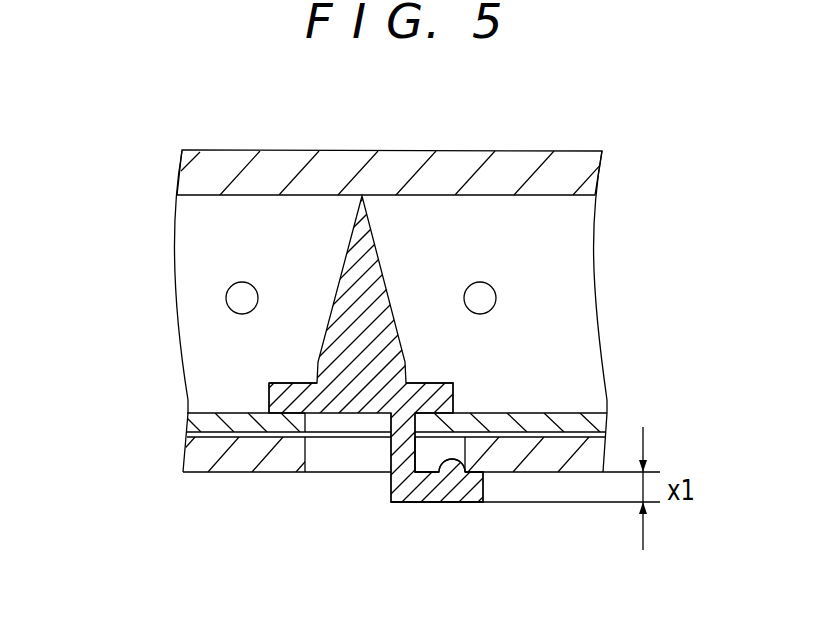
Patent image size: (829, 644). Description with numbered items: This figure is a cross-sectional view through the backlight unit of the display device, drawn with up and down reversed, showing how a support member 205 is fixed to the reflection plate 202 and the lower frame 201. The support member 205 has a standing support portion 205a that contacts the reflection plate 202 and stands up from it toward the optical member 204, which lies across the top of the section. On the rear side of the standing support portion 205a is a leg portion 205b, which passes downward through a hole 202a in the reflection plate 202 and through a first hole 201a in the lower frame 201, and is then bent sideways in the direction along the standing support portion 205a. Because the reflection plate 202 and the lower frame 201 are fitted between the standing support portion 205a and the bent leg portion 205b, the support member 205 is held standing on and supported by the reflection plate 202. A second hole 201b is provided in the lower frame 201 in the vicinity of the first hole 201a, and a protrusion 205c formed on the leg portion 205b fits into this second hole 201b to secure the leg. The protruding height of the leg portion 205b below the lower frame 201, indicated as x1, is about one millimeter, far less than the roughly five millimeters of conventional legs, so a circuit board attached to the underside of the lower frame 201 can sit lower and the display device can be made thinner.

The optical member 204 is at (468, 163).
The support member 205 is at (316, 350).
The standing support portion 205a is at (313, 397).
The leg portion 205b is at (461, 484).
The protrusion 205c is at (448, 462).
The reflection plate 202 is at (218, 424).
The lower frame 201 is at (207, 452).
The hole in reflection plate 202a is at (335, 420).
The first hole in lower frame 201a is at (357, 458).
The second hole in lower frame 201b is at (455, 447).